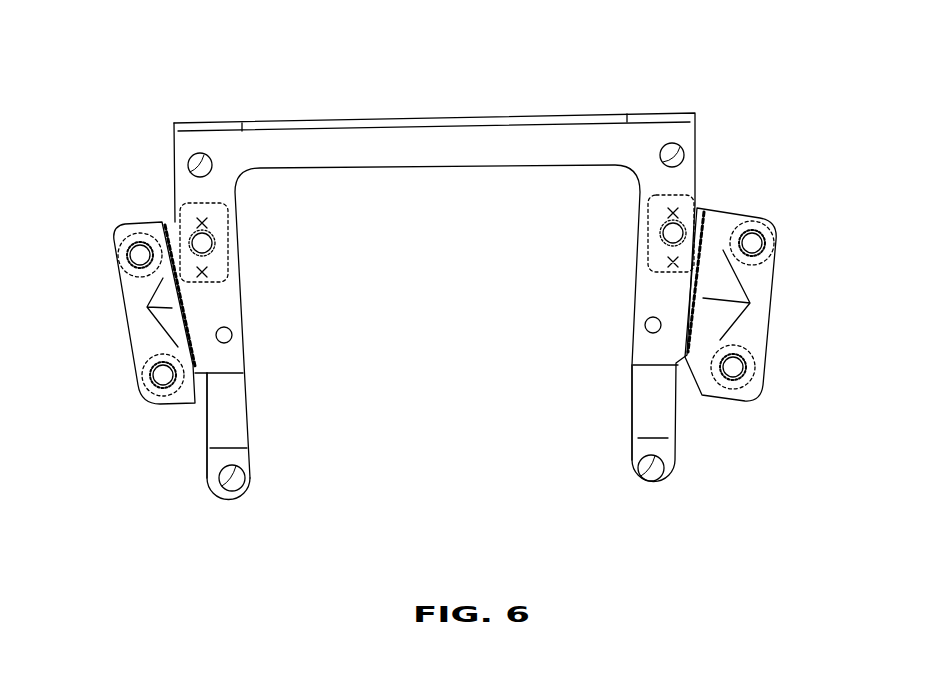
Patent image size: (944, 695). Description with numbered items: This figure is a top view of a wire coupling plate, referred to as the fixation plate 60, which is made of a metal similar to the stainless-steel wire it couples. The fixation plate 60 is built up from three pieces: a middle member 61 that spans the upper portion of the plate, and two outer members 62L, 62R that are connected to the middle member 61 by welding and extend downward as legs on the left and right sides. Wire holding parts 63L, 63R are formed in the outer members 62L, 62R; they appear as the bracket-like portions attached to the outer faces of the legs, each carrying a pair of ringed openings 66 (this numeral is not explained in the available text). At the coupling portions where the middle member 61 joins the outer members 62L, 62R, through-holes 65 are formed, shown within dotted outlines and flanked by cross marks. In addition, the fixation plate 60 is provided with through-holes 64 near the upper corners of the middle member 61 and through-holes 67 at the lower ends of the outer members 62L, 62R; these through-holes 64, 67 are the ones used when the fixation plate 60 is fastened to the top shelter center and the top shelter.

The fixation plate 60 is at (392, 100).
The middle member 61 is at (430, 163).
The outer member 62L is at (240, 415).
The outer member 62R is at (638, 392).
The wire holding part 63L is at (122, 330).
The wire holding part 63R is at (778, 308).
The through-hole 64 is at (195, 160).
The through-hole 65 is at (207, 243).
The attachment hole 66 is at (133, 258).
The through-hole 67 is at (225, 490).